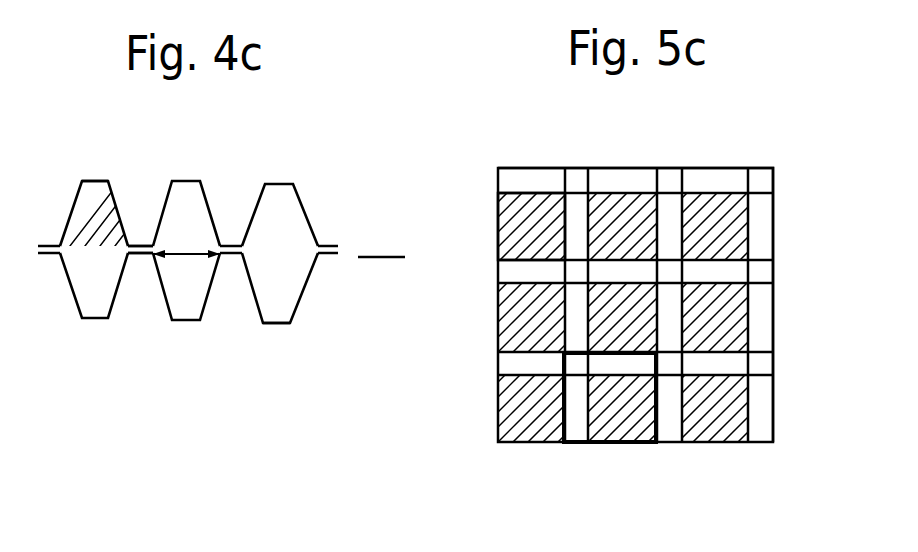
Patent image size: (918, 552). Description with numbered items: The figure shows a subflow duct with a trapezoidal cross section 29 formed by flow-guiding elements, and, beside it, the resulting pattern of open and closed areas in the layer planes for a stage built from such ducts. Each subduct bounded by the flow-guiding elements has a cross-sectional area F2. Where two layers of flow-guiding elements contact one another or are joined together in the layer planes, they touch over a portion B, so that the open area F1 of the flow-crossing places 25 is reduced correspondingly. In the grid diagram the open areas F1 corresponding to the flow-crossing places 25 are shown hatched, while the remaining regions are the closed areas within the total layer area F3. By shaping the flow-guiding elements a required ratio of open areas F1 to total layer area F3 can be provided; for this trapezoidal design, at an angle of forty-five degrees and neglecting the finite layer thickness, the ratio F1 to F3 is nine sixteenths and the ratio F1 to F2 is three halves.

In FIG. 4C, the flow-crossing place 25 is at (287, 265).
In FIG. 5C, the flow-crossing place 25 is at (618, 203).
In FIG. 4C, the trapezoidal cross section 29 is at (265, 323).
In FIG. 4C, the contact portion B is at (137, 255).
In FIG. 4C, the open area F1 is at (180, 252).
In FIG. 5C, the open area F1 is at (520, 213).
In FIG. 4C, the cross-sectional area of subflow duct F2 is at (96, 203).
In FIG. 4C, the total layer area F3 is at (378, 253).
In FIG. 5C, the total layer area F3 is at (773, 170).